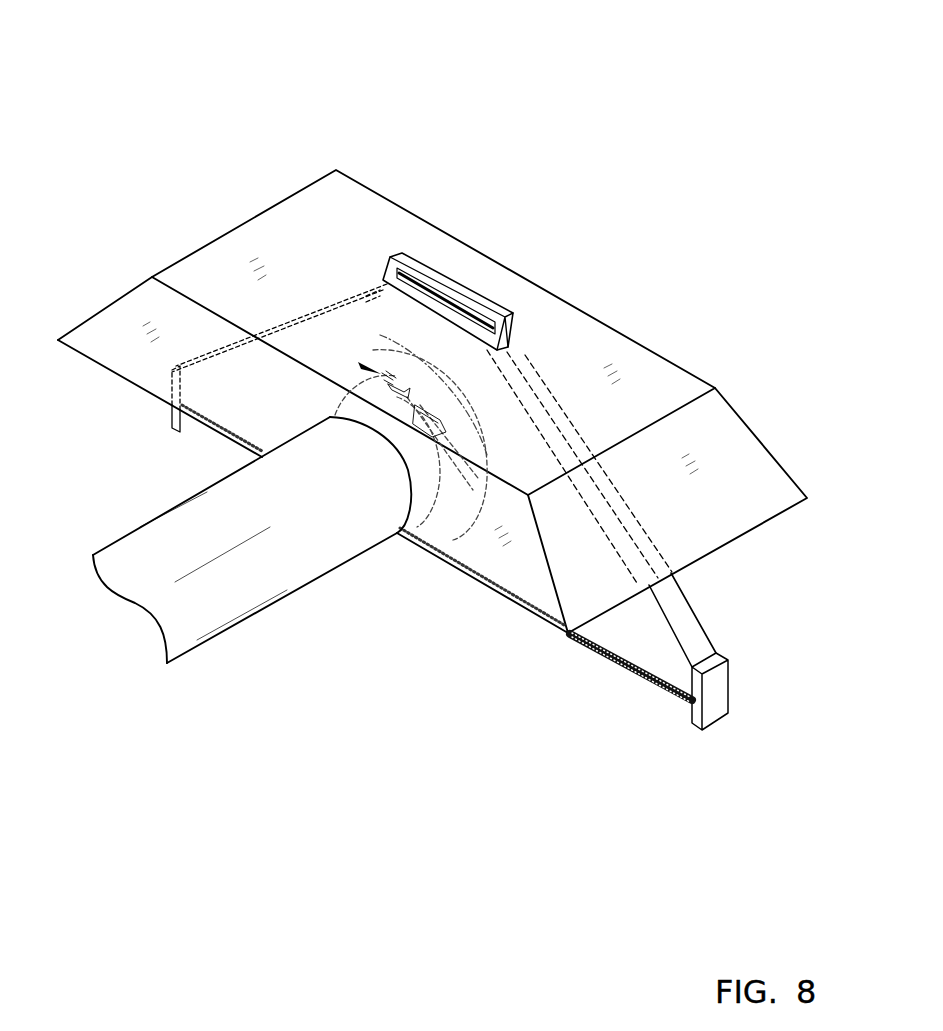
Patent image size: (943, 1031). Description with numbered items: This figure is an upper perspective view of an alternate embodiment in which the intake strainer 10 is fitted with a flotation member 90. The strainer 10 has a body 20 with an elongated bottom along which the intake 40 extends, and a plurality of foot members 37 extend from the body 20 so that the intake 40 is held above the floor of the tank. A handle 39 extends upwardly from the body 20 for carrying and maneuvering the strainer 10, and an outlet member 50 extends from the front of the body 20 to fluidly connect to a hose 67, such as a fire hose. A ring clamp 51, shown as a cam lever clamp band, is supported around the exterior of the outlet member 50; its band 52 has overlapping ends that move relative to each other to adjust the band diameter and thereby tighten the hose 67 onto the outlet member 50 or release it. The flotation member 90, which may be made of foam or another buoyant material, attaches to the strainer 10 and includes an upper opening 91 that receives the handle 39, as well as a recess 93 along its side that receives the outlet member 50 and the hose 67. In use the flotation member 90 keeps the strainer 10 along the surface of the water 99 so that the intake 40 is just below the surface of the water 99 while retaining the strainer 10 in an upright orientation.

The intake strainer 10 is at (611, 680).
The body 20 is at (707, 617).
The foot member 37 is at (707, 717).
The handle 39 is at (440, 282).
The intake 40 is at (578, 646).
The outlet member 50 is at (380, 335).
The ring clamp 51 is at (362, 365).
The band 52 is at (453, 480).
The hose 67 is at (155, 580).
The flotation member 90 is at (635, 374).
The upper opening 91 is at (515, 340).
The recess 93 is at (410, 498).
The surface of the water 99 is at (415, 165).